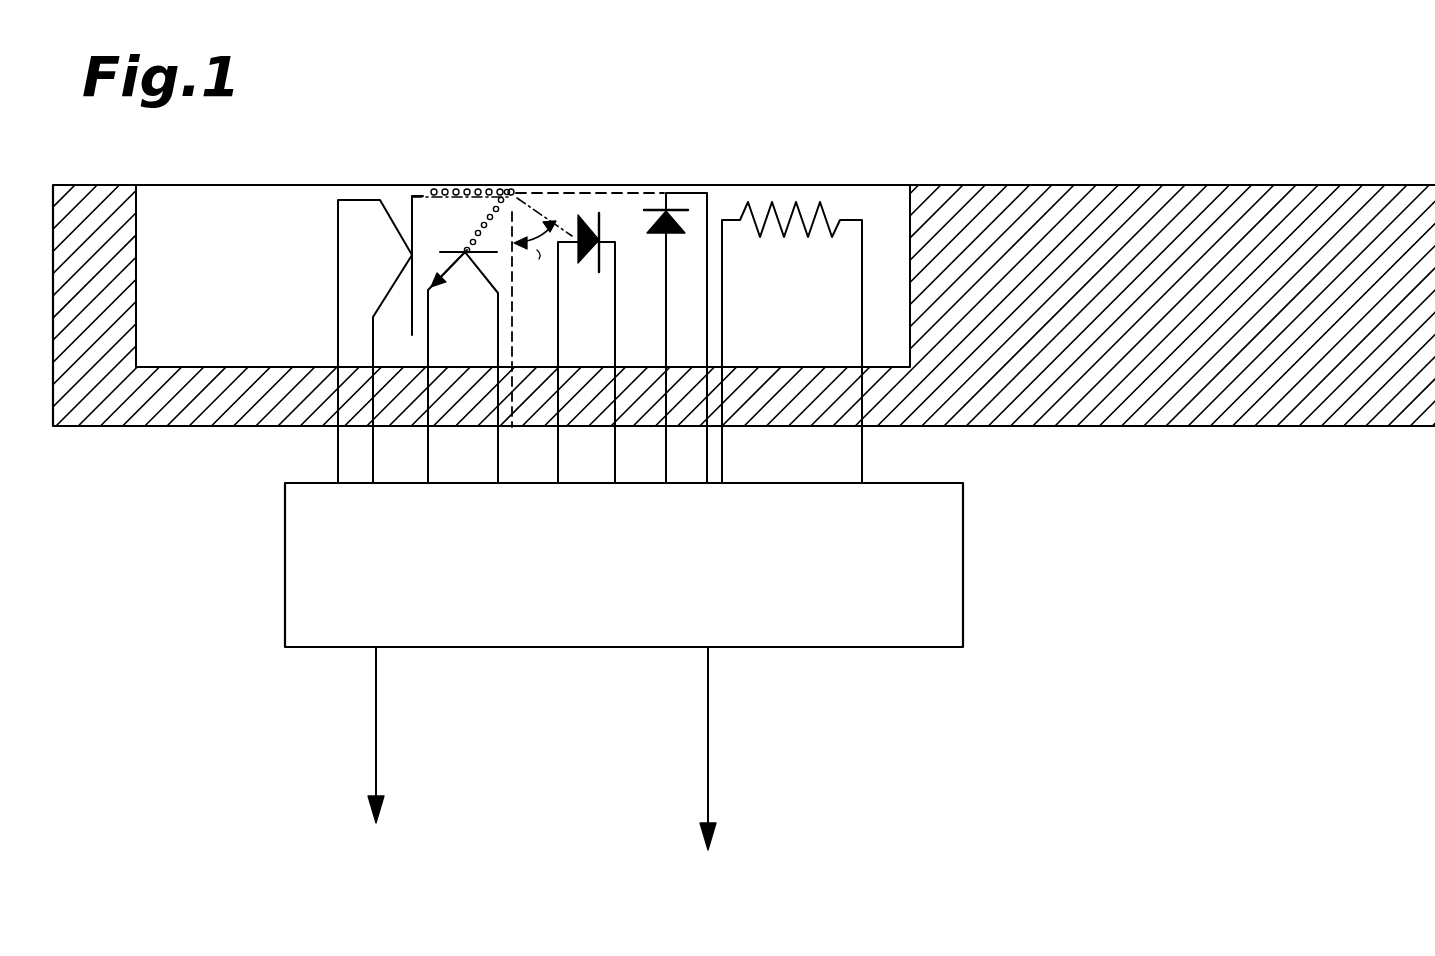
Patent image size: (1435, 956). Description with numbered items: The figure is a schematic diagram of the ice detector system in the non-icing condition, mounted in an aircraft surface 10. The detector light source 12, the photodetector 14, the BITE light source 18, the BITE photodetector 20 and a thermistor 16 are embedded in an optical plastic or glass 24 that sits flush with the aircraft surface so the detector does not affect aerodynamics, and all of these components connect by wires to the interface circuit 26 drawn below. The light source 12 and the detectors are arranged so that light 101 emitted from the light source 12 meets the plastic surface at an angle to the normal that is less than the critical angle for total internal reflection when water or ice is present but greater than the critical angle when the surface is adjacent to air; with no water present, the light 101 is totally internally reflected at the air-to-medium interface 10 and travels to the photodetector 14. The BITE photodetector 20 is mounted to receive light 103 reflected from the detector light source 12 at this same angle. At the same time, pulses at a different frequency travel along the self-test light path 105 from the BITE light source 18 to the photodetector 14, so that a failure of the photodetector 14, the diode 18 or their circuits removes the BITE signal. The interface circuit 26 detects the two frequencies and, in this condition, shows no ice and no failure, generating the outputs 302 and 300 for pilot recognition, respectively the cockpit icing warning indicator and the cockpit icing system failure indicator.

The aircraft surface 10 is at (1100, 186).
The optical plastic or glass 24 is at (206, 299).
The photodetector 14 is at (381, 200).
The BITE photodetector 20 is at (463, 366).
The light 101 is at (462, 200).
The light 103 is at (518, 199).
The light 105 is at (634, 192).
The light source 12 is at (588, 262).
The BITE light source 18 is at (659, 237).
The thermistor 16 is at (797, 237).
The interface circuit 26 is at (876, 575).
The output 302 is at (377, 700).
The output 300 is at (709, 705).